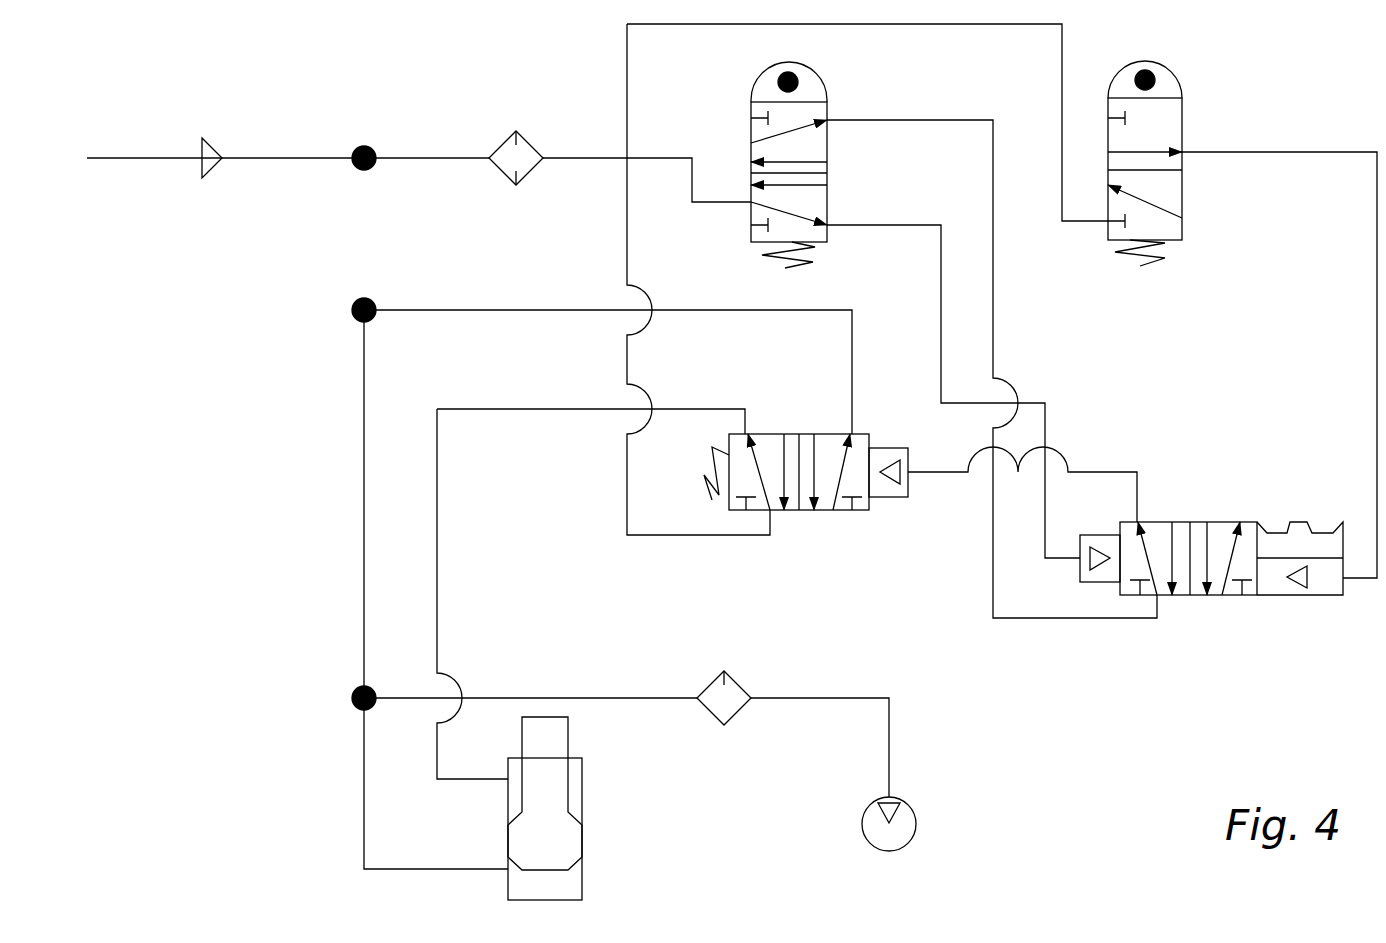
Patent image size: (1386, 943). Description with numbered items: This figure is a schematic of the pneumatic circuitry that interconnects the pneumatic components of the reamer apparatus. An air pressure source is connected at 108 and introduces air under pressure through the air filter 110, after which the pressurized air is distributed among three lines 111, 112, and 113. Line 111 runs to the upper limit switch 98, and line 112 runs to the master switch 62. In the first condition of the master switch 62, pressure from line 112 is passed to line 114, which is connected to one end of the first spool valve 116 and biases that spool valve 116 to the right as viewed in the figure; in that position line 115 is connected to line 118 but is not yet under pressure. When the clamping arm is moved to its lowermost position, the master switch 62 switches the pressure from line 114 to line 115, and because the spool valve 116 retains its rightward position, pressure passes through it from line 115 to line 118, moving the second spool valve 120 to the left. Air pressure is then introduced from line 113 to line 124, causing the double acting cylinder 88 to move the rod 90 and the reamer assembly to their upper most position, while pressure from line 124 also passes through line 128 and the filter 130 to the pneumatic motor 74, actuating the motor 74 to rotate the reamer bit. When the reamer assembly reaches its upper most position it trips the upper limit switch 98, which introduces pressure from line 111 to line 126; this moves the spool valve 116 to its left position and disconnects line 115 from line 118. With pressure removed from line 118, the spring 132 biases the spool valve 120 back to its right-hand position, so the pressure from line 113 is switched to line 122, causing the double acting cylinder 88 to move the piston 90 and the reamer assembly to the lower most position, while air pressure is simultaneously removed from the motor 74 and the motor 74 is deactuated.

The master switch 62 is at (750, 78).
The pneumatic motor 74 is at (914, 822).
The double acting cylinder 88 is at (582, 886).
The rod 90 is at (568, 734).
The upper limit switch 98 is at (1163, 68).
The air pressure source connection 108 is at (275, 157).
The air filter 110 is at (503, 143).
The line 111 is at (906, 25).
The line 112 is at (660, 158).
The line 113 is at (627, 231).
The line 114 is at (942, 248).
The line 115 is at (918, 118).
The first spool valve 116 is at (1300, 520).
The line 118 is at (1100, 472).
The second spool valve 120 is at (805, 432).
The line 122 is at (545, 408).
The line 124 is at (522, 309).
The line 126 is at (1377, 322).
The line 128 is at (512, 697).
The filter 130 is at (738, 680).
The spring 132 is at (710, 470).